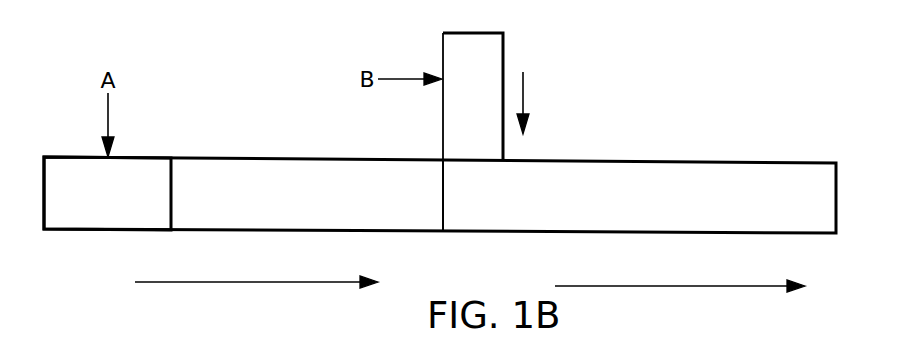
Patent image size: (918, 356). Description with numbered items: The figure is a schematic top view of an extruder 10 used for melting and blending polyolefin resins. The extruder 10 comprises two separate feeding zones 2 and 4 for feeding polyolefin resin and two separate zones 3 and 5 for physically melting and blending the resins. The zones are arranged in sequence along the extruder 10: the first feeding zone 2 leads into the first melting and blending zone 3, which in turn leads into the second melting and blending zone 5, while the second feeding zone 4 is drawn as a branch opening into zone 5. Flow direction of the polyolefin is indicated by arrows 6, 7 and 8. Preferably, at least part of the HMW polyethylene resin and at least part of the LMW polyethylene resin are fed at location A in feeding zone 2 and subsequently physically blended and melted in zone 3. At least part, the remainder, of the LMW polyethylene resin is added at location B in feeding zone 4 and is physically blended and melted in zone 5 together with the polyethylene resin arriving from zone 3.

The feeding zone 2 is at (100, 206).
The melting and blending zone 3 is at (299, 206).
The feeding zone 4 is at (467, 111).
The melting and blending zone 5 is at (680, 209).
The arrow 6 is at (254, 282).
The arrow 7 is at (524, 88).
The arrow 8 is at (681, 286).
The extruder 10 is at (813, 150).